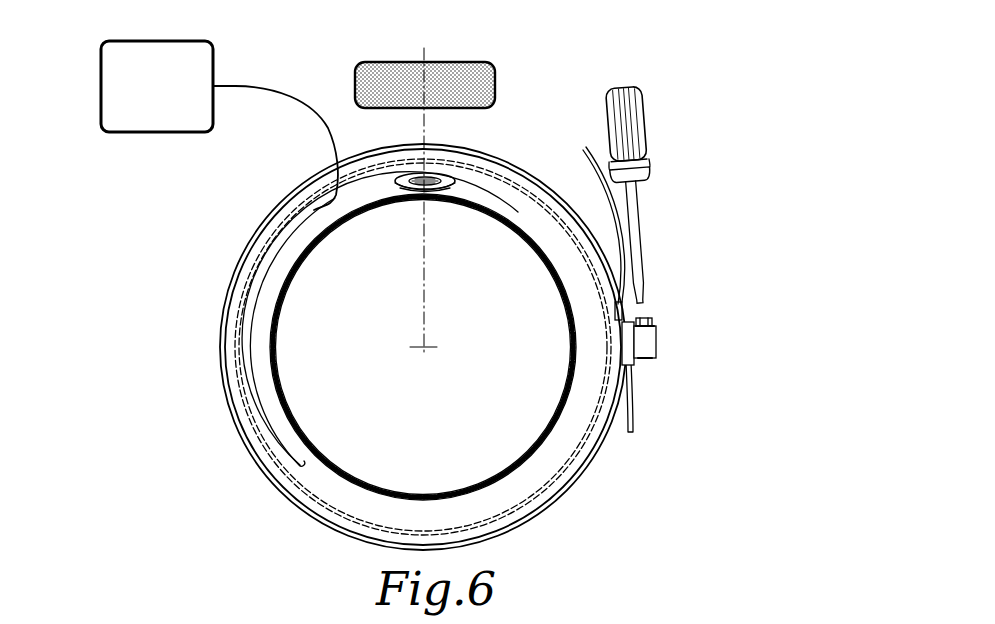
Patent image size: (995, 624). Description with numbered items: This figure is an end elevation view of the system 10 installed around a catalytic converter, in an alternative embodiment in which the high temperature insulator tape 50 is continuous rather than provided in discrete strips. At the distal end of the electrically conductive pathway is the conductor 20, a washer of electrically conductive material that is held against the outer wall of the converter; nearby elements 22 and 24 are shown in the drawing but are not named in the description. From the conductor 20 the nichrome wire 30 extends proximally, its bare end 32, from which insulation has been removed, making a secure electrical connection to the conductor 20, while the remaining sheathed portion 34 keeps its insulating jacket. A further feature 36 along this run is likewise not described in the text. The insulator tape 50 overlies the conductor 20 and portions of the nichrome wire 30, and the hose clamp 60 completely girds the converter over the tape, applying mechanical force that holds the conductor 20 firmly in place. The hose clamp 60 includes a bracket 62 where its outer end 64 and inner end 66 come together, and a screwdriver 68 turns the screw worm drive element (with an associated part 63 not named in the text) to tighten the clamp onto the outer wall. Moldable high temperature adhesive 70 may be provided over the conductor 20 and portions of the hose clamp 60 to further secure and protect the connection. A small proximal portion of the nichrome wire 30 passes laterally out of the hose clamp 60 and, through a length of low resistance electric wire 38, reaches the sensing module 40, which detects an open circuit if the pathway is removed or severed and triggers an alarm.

The system 10 is at (157, 243).
The conductor 20 is at (470, 191).
The port fitting 22 is at (437, 178).
The fitting base 24 is at (441, 191).
The nichrome wire 30 is at (273, 139).
The bare end 32 is at (372, 193).
The sheathed portion 34 is at (270, 92).
The channel 36 is at (247, 400).
The low resistance electric wire 38 is at (228, 86).
The sensing module 40 is at (157, 86).
The high temperature insulator tape 50 is at (238, 345).
The hose clamp 60 is at (594, 485).
The bracket 62 is at (658, 340).
The clamp screw 63 is at (646, 321).
The outer end 64 is at (638, 417).
The inner end 66 is at (614, 309).
The screwdriver 68 is at (668, 132).
The moldable high temperature adhesive 70 is at (493, 58).